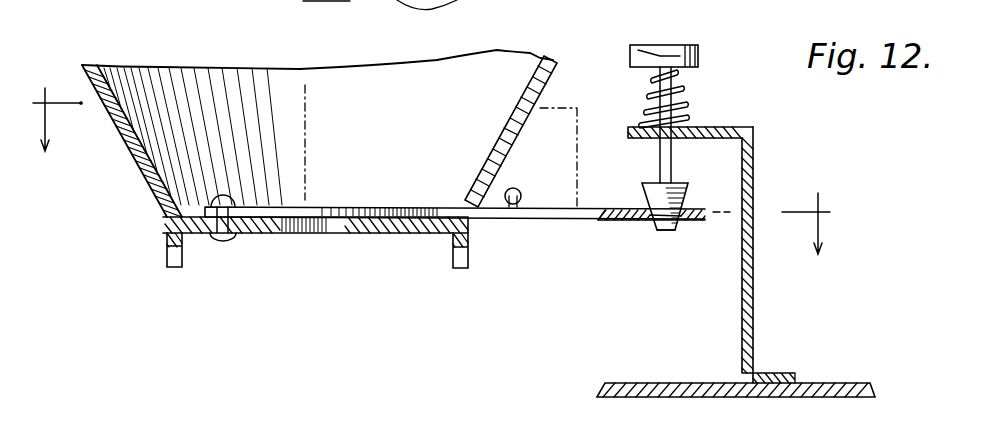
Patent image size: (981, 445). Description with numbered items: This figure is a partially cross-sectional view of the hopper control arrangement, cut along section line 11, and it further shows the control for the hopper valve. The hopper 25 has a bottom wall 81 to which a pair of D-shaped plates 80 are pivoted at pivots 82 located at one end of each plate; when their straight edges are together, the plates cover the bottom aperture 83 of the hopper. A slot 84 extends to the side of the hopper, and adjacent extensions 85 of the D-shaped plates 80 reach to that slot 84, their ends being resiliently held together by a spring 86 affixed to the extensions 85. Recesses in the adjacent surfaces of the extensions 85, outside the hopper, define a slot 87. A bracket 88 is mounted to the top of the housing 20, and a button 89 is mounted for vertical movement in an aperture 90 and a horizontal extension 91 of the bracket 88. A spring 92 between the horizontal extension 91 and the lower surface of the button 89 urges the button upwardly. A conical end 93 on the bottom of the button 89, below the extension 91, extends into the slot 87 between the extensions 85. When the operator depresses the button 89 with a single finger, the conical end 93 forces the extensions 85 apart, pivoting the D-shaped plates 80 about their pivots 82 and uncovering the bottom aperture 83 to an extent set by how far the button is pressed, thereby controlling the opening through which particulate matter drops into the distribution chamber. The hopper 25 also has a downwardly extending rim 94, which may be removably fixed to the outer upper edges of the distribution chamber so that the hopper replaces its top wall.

The section line 11- 11 is at (443, 176).
The housing 20 is at (658, 383).
The hopper 25 is at (140, 163).
The D-shaped plates 80 is at (338, 208).
The bottom wall 81 is at (415, 232).
The pivots 82 is at (219, 238).
The bottom aperture 83 is at (348, 222).
The slot 84 is at (460, 206).
The extensions 85 is at (565, 216).
The spring 86 is at (521, 189).
The slot 87 is at (675, 229).
The bracket 88 is at (755, 328).
The button 89 is at (690, 45).
The aperture 90 is at (660, 141).
The horizontal extension 91 is at (731, 128).
The spring 92 is at (677, 90).
The conical end 93 is at (692, 187).
The rim 94 is at (165, 237).